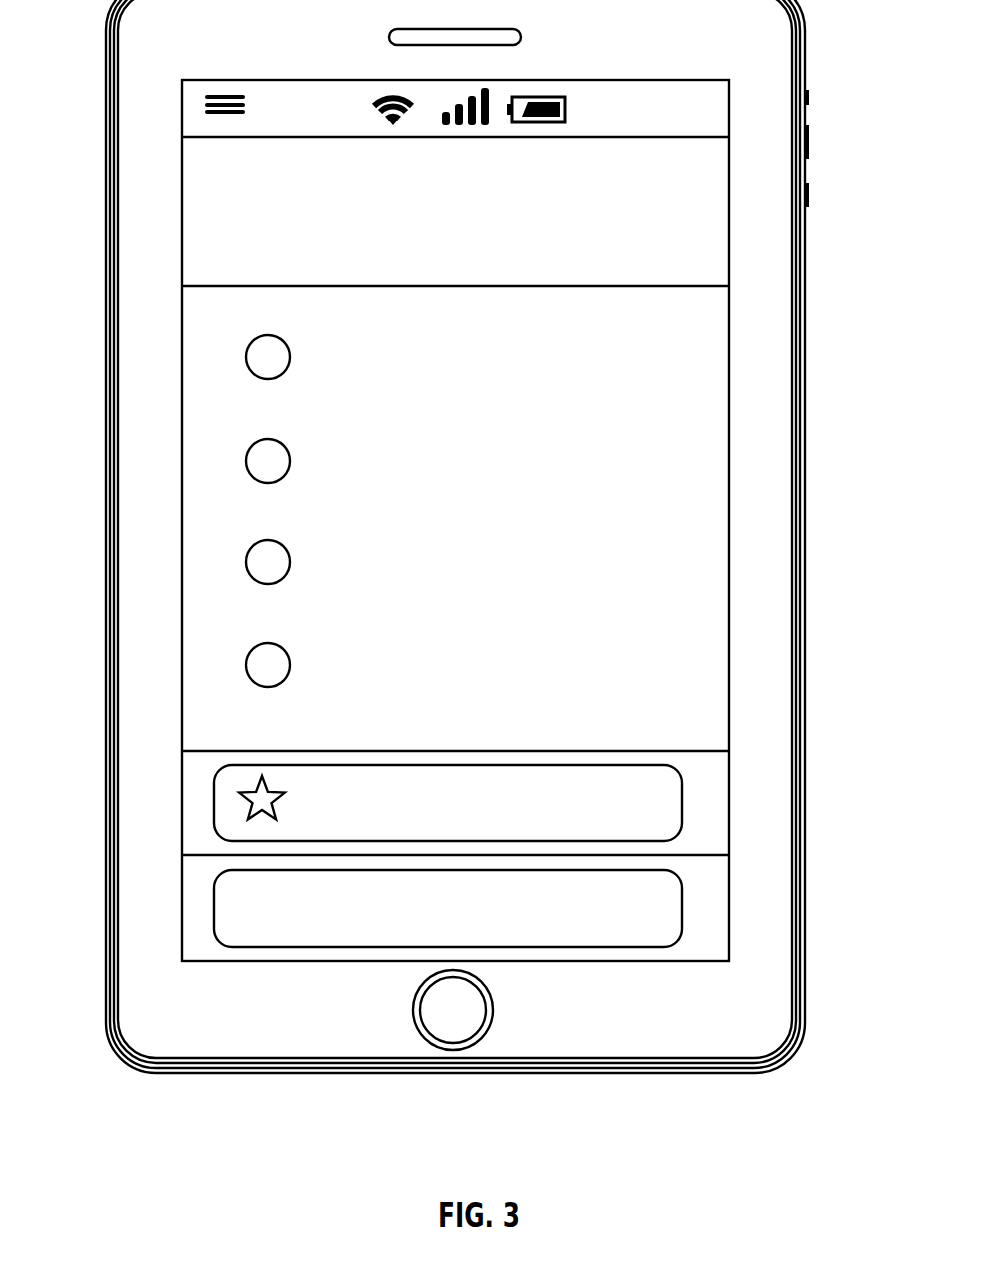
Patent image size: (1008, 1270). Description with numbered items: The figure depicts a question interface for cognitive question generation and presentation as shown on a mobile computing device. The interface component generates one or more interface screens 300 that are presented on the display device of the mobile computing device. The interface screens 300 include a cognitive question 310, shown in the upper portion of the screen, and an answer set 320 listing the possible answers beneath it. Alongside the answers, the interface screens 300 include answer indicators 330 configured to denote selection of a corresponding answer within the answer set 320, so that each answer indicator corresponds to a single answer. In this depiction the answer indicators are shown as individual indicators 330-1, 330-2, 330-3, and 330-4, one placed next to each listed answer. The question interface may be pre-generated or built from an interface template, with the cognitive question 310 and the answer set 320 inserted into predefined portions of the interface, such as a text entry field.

The interface screens 300 is at (166, 140).
The cognitive question 310 is at (679, 201).
The answer set 320 is at (682, 450).
The answer indicators 330 is at (160, 470).
The first answer indicator 330-1 is at (248, 352).
The second answer indicator 330-2 is at (248, 456).
The third answer indicator 330-3 is at (248, 557).
The fourth selection control 330-4 is at (248, 660).